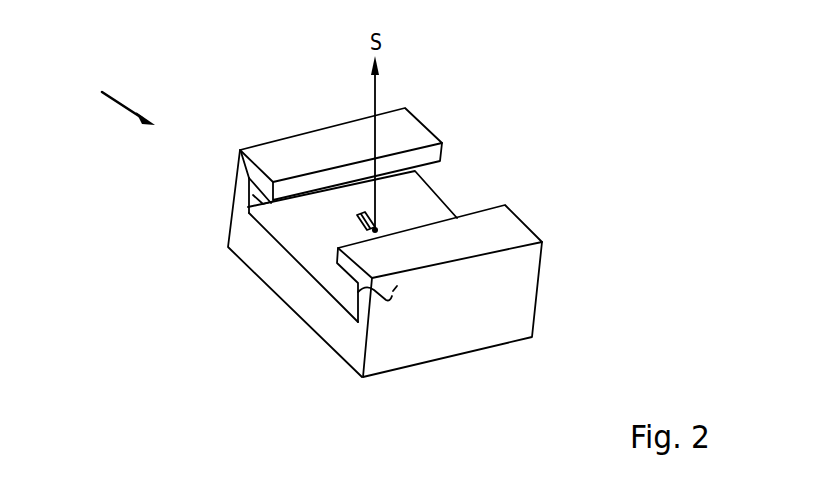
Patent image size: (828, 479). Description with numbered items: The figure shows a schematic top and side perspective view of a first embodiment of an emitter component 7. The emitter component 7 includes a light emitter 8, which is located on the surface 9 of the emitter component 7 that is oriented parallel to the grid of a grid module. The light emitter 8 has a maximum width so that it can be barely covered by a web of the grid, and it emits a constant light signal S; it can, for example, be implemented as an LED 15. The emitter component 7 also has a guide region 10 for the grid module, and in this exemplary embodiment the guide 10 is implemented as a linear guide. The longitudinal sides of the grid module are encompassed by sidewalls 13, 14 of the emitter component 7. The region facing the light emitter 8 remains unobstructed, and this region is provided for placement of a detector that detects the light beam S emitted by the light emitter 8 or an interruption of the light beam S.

The emitter component 7 is at (121, 100).
The light emitter 8 is at (340, 231).
The surface 9 is at (403, 188).
The guide region 10 is at (322, 281).
The sidewall 13 is at (247, 214).
The sidewall 14 is at (357, 292).
The LED 15 is at (378, 230).